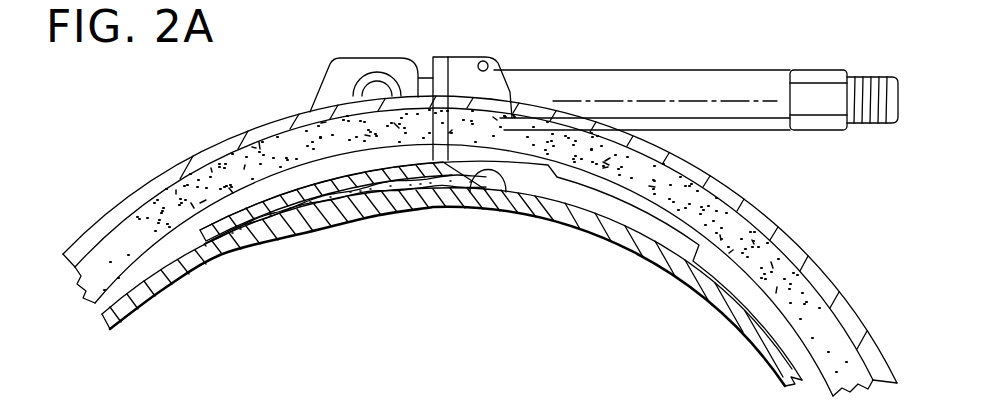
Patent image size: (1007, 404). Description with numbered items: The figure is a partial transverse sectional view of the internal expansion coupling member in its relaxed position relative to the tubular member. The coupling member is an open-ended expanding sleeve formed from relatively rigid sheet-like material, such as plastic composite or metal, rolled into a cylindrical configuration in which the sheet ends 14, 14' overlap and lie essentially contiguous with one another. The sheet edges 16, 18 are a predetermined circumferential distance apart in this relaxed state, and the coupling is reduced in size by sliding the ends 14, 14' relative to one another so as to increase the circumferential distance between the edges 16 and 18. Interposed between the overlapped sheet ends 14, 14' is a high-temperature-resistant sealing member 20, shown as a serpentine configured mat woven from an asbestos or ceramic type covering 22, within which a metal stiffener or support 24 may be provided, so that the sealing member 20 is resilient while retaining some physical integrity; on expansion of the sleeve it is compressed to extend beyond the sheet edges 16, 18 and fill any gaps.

The sheet end 14 is at (452, 273).
The sheet end 14' is at (343, 151).
The sheet edge 16 is at (506, 192).
The sheet edge 18 is at (224, 258).
The sealing member 20 is at (201, 262).
The covering 22 is at (311, 205).
The metal stiffener or support 24 is at (281, 214).